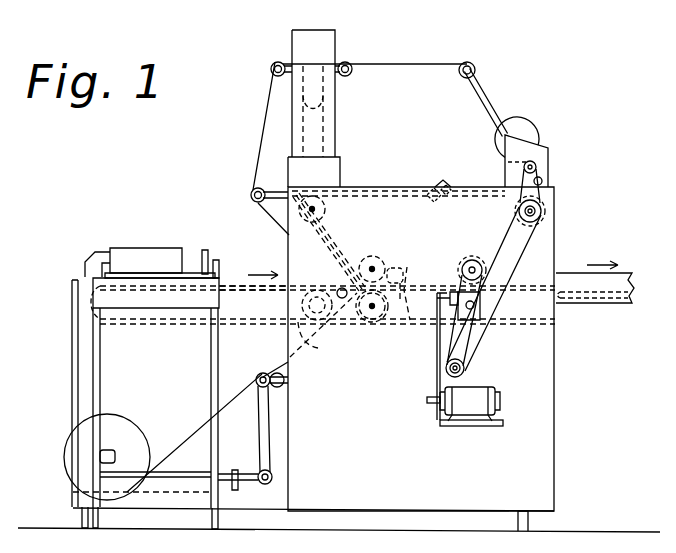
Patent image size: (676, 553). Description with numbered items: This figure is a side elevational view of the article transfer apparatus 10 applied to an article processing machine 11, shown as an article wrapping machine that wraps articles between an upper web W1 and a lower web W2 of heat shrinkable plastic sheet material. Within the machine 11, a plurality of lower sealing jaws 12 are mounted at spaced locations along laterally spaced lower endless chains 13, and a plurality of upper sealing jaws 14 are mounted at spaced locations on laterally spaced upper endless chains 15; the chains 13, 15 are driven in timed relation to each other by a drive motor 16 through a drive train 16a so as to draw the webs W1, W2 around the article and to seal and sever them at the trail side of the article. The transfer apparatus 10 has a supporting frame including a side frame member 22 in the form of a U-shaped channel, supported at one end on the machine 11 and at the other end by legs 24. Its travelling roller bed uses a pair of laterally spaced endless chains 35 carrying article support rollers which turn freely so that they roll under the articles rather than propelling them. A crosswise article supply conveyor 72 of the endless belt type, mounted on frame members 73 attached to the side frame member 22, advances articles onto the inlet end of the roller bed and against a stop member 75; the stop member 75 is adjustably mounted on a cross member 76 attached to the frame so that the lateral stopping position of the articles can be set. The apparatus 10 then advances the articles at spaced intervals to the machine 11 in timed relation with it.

The article transfer apparatus 10 is at (185, 212).
The article processing machine 11 is at (379, 175).
The lower sealing jaws 12 is at (413, 323).
The lower endless chains 13 is at (385, 325).
The upper sealing jaws 14 is at (407, 267).
The upper endless chains 15 is at (328, 242).
The drive motor 16 is at (482, 388).
The drive train 16a is at (492, 328).
The side frame member 22 is at (245, 314).
The legs 24 is at (80, 363).
The endless chains 35 is at (311, 346).
The article supply conveyor 72 is at (160, 276).
The frame members 73 is at (220, 292).
The stop member 75 is at (143, 247).
The cross member 76 is at (112, 248).
The upper web of heat shrinkable plastic sheet material W1 is at (258, 135).
The lower web of heat shrinkable plastic sheet material W2 is at (193, 432).